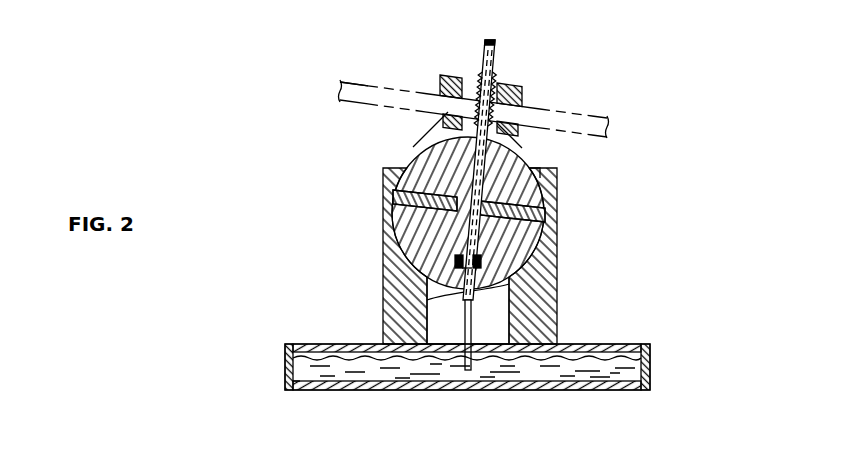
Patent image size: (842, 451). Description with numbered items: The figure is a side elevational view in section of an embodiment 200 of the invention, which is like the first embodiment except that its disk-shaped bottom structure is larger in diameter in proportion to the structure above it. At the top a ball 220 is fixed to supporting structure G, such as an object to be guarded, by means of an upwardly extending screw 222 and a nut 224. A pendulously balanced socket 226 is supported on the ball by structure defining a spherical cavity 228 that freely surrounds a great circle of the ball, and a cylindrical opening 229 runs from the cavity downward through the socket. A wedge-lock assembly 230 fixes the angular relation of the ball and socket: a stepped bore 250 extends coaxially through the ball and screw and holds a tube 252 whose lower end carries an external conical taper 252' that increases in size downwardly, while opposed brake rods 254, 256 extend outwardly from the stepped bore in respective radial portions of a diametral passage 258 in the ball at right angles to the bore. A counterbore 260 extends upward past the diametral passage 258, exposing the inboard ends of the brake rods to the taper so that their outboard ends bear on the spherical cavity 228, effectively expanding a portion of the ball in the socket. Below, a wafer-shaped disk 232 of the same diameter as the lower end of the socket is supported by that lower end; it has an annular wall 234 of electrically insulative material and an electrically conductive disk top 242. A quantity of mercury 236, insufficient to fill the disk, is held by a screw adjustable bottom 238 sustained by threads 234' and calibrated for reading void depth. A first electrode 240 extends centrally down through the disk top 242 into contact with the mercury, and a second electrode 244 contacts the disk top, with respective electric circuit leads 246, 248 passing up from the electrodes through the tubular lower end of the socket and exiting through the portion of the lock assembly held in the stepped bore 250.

The embodiment 200 is at (500, 48).
The ball 220 is at (530, 118).
The supporting structure G is at (340, 84).
The screw 222 is at (495, 82).
The nut 224 is at (447, 77).
The socket 226 is at (557, 188).
The spherical cavity 228 is at (540, 172).
The cylindrical opening 229 is at (510, 283).
The wedge-lock assembly 230 is at (440, 146).
The disk 232 is at (289, 339).
The annular wall 234 is at (420, 372).
The threads 234' is at (250, 395).
The mercury 236 is at (288, 352).
The screw adjustable bottom 238 is at (380, 390).
The first electrode 240 is at (471, 383).
The disk top 242 is at (577, 348).
The second electrode 244 is at (460, 340).
The electric circuit lead 246 is at (497, 293).
The electric circuit lead 248 is at (458, 302).
The stepped bore 250 is at (443, 178).
The tube 252 is at (580, 168).
The external conical taper 252' is at (576, 253).
The brake rod 254 is at (394, 198).
The brake rod 256 is at (540, 221).
The diametral passage 258 is at (394, 228).
The counterbore 260 is at (456, 262).